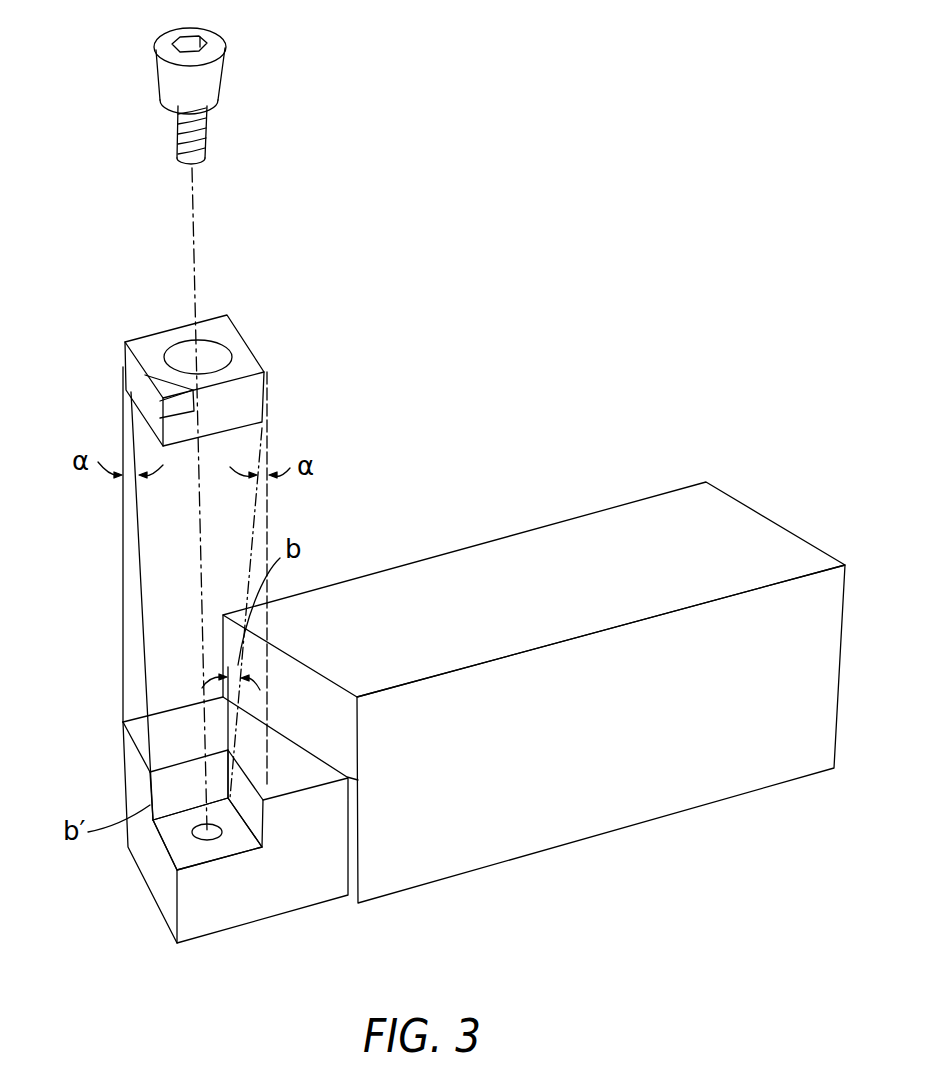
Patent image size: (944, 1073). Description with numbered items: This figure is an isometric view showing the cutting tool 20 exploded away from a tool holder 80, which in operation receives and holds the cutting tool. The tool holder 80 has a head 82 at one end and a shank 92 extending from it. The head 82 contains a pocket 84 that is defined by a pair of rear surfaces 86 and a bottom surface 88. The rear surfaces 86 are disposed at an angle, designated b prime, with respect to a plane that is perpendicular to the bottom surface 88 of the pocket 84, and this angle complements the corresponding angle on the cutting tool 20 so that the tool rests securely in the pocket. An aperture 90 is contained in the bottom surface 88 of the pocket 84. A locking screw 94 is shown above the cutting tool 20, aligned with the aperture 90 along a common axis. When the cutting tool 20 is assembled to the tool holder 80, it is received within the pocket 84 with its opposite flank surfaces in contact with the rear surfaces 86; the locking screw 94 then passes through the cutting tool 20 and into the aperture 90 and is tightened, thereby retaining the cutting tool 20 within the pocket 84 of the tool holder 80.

The cutting tool 20 is at (320, 304).
The tool holder 80 is at (453, 681).
The head 82 is at (245, 848).
The pocket 84 is at (207, 850).
The rear surfaces 86 is at (172, 783).
The bottom surface 88 is at (172, 837).
The aperture 90 is at (195, 843).
The shank 92 is at (718, 785).
The locking screw 94 is at (215, 82).